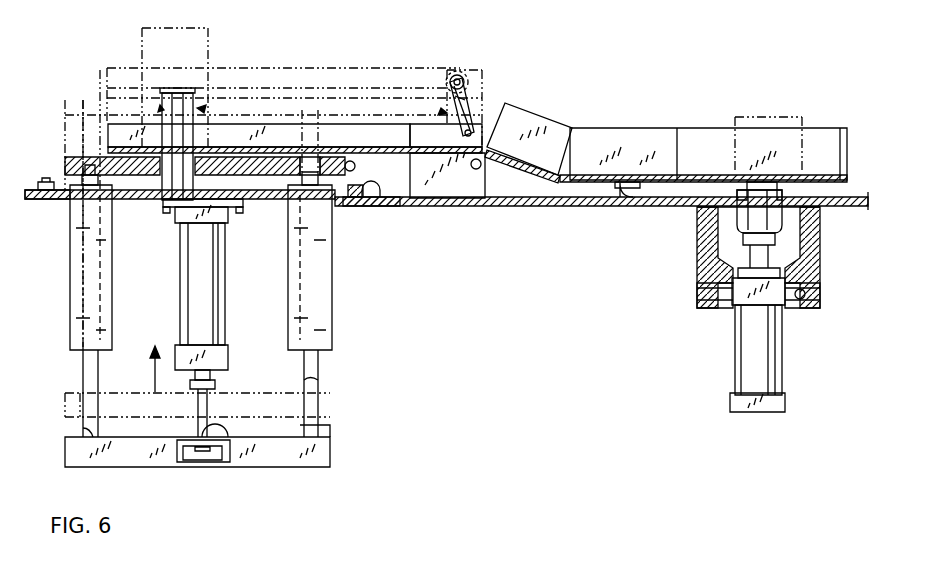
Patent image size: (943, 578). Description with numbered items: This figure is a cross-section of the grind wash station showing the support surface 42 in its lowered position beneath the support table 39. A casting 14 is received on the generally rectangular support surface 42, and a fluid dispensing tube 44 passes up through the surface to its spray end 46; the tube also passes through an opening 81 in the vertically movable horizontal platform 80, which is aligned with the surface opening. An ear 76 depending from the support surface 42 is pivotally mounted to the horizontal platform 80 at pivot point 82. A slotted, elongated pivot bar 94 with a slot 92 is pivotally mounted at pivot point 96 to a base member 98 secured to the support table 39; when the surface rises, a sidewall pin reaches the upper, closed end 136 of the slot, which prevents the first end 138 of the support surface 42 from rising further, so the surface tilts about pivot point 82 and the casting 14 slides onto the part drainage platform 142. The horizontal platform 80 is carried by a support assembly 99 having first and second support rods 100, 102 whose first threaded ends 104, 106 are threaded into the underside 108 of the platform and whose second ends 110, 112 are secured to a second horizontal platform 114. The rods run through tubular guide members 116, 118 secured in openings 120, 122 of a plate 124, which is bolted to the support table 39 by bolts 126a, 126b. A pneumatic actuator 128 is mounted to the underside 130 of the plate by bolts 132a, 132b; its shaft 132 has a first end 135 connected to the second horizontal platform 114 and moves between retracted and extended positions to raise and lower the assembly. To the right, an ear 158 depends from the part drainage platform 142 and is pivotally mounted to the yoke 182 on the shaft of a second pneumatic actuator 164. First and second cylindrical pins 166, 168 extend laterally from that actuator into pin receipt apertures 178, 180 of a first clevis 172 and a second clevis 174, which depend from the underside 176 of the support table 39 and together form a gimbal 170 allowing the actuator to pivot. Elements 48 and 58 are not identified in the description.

The casting 14 is at (178, 27).
The support table 39 is at (446, 208).
The support surface 42 is at (110, 135).
The fluid dispensing tube 44 is at (200, 110).
The second spray end 46 is at (168, 90).
The plate 48 is at (405, 150).
The block 58 is at (480, 208).
The ear 76 is at (357, 167).
The horizontal platform 80 is at (78, 106).
The opening 81 is at (160, 110).
The pivot point 82 is at (358, 200).
The slot 92 is at (458, 98).
The pivot bar 94 is at (445, 112).
The pivot point 96 is at (480, 168).
The base member 98 is at (630, 196).
The support assembly 99 is at (62, 323).
The first support rod 100 is at (66, 378).
The second support rod 102 is at (320, 378).
The first threaded end 104 is at (80, 158).
The first threaded end 106 is at (325, 158).
The underside 108 is at (153, 202).
The second end 110 is at (80, 432).
The second end 112 is at (330, 433).
The second horizontal platform 114 is at (676, 0).
The guide member 116 is at (72, 250).
The guide member 118 is at (320, 297).
The opening 120 is at (100, 245).
The opening 122 is at (340, 202).
The plate 124 is at (60, 200).
The bolt 126a is at (40, 186).
The bolt 126b is at (372, 200).
The pneumatic actuator 128 is at (190, 303).
The underside 130 is at (165, 210).
The shaft 132 is at (216, 386).
The bolt 132a is at (182, 252).
The bolt 132b is at (234, 214).
The first end 135 is at (232, 462).
The upper, closed end 136 is at (455, 74).
The first end 138 is at (475, 72).
The part drainage platform 142 is at (558, 206).
The ear 158 is at (748, 183).
The pneumatic actuator 164 is at (744, 358).
The first cylindrical pin 166 is at (716, 304).
The second cylindrical pin 168 is at (813, 290).
The gimbal 170 is at (816, 365).
The first clevis 172 is at (700, 258).
The second clevis 174 is at (812, 222).
The underside 176 is at (677, 207).
The cylindrical pin receipt aperture 178 is at (700, 292).
The cylindrical pin receipt aperture 180 is at (800, 302).
The yoke 182 is at (778, 182).